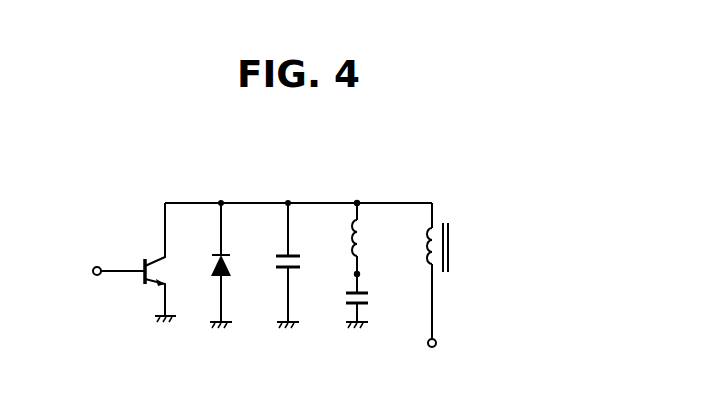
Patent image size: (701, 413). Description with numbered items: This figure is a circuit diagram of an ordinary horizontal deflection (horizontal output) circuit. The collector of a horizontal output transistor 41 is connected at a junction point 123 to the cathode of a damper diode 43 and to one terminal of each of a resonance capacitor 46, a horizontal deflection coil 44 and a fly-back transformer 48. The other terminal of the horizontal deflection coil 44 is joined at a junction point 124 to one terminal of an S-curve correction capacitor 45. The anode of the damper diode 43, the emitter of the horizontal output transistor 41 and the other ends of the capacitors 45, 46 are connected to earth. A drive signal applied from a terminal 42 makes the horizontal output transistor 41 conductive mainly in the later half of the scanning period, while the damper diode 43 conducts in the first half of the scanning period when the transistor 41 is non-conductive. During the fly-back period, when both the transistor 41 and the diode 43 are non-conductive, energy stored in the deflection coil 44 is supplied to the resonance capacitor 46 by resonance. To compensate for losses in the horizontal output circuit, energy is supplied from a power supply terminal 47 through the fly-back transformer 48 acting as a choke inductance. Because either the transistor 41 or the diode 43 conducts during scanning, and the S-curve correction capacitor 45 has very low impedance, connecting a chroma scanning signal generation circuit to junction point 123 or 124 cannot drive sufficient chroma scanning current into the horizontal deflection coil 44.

The horizontal output transistor 41 is at (146, 281).
The terminal 42 is at (97, 276).
The damper diode 43 is at (214, 277).
The horizontal deflection coil 44 is at (362, 232).
The S-curve correction capacitor 45 is at (368, 297).
The resonance capacitor 46 is at (298, 261).
The power supply terminal 47 is at (437, 345).
The fly-back transformer 48 is at (452, 248).
The junction point 123 is at (359, 201).
The junction point 124 is at (359, 273).